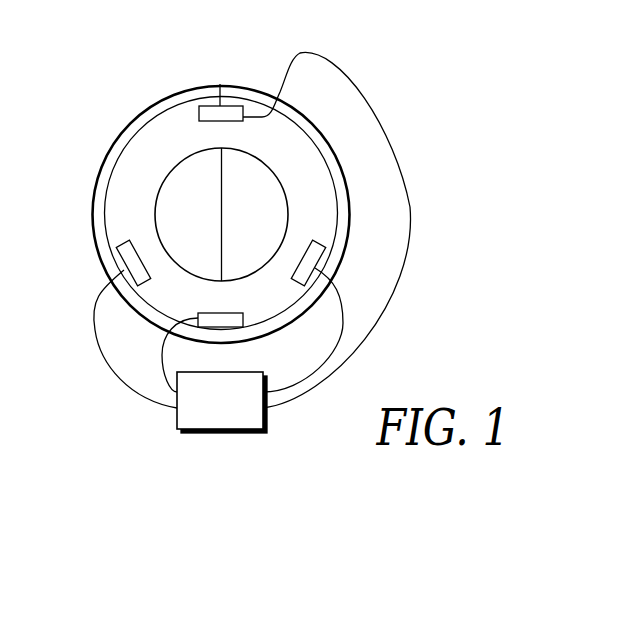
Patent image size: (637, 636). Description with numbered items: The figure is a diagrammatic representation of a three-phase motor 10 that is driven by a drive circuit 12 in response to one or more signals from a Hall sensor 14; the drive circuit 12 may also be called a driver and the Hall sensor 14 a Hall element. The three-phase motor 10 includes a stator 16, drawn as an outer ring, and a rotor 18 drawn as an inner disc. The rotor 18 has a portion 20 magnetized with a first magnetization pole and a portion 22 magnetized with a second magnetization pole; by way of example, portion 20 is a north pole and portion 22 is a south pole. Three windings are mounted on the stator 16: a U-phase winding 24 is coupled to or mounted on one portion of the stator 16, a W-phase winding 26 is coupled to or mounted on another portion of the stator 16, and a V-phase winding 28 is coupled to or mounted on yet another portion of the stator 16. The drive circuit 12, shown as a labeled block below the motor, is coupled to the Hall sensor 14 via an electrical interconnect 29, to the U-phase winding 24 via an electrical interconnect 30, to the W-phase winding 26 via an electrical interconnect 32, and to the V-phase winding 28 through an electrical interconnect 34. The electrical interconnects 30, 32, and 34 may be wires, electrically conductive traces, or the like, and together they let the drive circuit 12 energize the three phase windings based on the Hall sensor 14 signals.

The three-phase motor 10 is at (182, 72).
The drive circuit 12 is at (202, 432).
The Hall sensor 14 is at (229, 314).
The stator 16 is at (112, 143).
The rotor 18 is at (182, 158).
The portion magnetized with first magnetization pole 20 is at (298, 173).
The portion magnetized with second magnetization pole 22 is at (127, 198).
The U-phase winding 24 is at (117, 246).
The W-phase winding 26 is at (323, 243).
The V-phase winding 28 is at (279, 108).
The electrical interconnect 29 is at (162, 366).
The electrical interconnect 30 is at (110, 375).
The electrical interconnect 32 is at (328, 364).
The electrical interconnect 34 is at (385, 108).